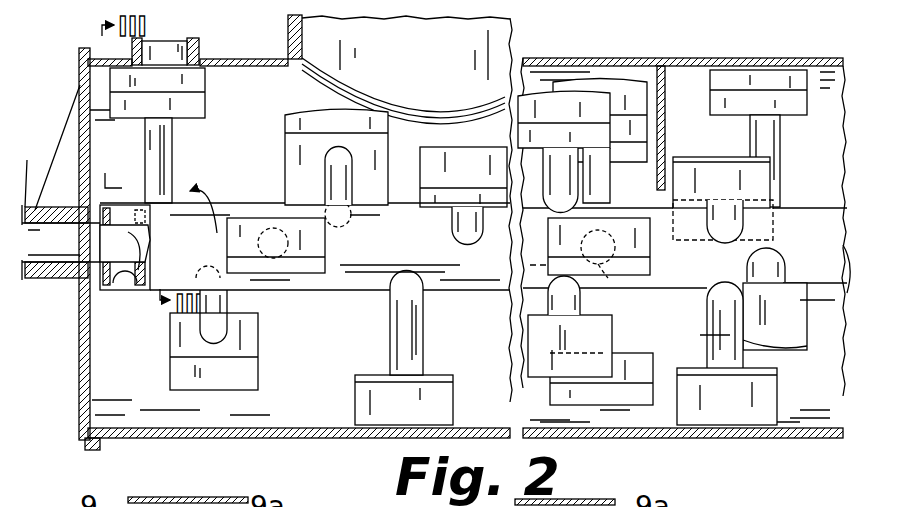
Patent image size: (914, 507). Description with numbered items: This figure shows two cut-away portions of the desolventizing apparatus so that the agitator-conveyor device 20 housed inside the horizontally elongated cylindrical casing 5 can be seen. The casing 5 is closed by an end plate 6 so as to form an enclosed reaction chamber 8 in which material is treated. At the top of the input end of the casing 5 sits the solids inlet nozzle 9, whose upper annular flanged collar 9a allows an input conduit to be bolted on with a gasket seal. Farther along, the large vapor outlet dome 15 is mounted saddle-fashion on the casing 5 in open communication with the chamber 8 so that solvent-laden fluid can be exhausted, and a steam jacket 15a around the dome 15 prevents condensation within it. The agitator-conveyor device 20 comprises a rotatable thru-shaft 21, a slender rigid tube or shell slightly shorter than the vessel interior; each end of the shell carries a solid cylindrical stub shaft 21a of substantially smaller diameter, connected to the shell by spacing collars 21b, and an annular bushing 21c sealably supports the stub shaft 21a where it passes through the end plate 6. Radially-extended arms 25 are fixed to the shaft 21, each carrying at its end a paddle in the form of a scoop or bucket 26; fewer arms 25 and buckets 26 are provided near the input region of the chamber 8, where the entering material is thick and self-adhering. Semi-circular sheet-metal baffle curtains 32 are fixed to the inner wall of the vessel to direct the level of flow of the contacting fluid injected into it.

The casing 5 is at (310, 425).
The end plate 6 is at (82, 450).
The reaction chamber 8 is at (675, 340).
The solids inlet nozzle 9 is at (198, 50).
The flanged collar 9a is at (197, 28).
The vapor outlet dome 15 is at (302, 38).
The steam jacket 15a is at (288, 34).
The agitator-conveyor device 20 is at (346, 305).
The rotatable thru-shaft 21 is at (282, 205).
The stub shaft 21a is at (61, 242).
The spacing collar 21b is at (120, 283).
The annular bushing 21c is at (48, 147).
The arm 25 is at (345, 186).
The bucket paddle 26 is at (300, 114).
The baffle curtain 32 is at (665, 101).